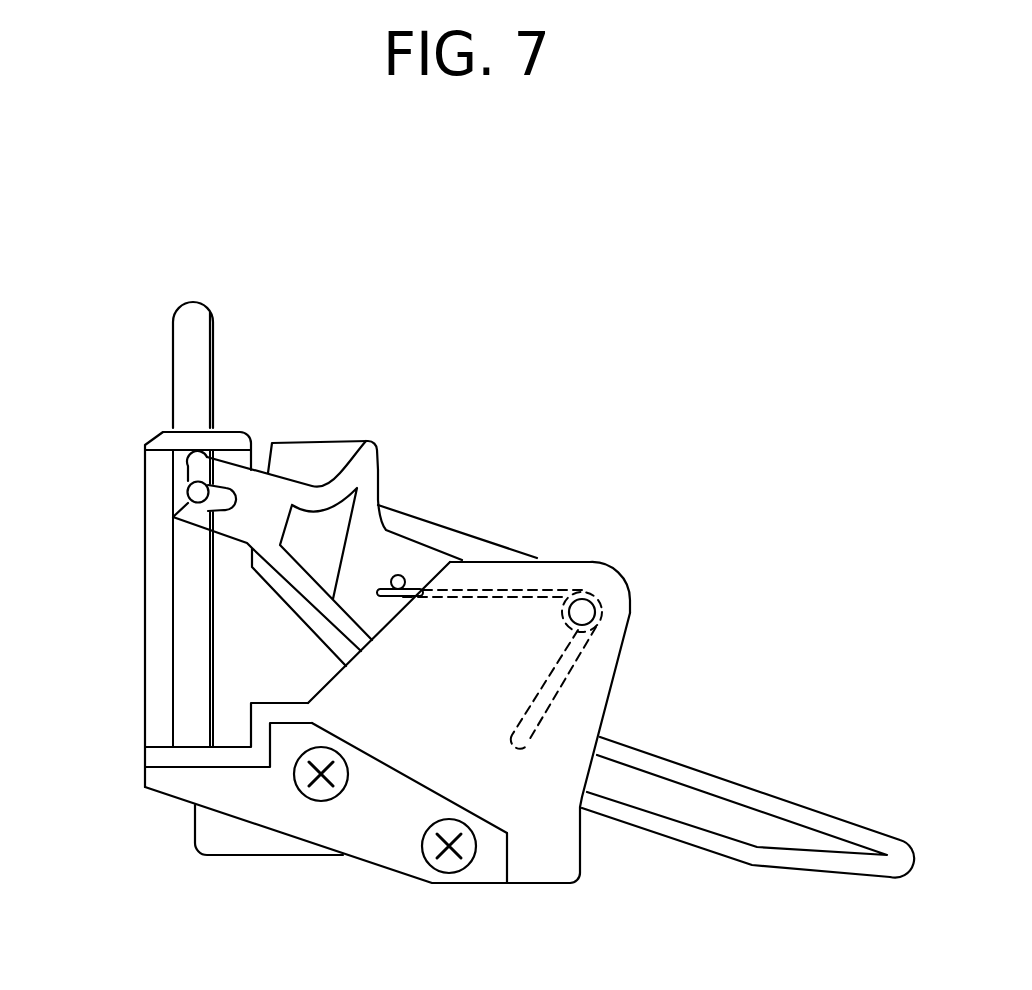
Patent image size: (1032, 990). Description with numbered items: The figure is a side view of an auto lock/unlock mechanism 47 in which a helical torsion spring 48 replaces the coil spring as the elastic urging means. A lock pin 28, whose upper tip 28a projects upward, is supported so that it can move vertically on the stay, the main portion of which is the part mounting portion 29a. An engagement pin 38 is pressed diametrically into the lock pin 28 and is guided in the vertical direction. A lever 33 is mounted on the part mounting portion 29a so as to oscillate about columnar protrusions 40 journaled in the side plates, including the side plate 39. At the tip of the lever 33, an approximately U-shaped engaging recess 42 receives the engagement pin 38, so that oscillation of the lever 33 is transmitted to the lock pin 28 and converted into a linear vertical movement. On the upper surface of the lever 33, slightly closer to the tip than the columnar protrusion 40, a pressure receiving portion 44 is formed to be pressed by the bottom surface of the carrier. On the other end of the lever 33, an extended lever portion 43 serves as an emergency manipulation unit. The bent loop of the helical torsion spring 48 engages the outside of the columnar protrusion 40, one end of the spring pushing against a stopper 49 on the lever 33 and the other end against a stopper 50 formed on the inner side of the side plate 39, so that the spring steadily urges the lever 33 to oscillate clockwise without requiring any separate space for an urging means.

The lock pin 28 is at (183, 383).
The pin tip 28a is at (187, 300).
The part mounting portion 29a is at (542, 862).
The lever 33 is at (268, 634).
The engagement pin 38 is at (187, 492).
The side plate 39 is at (580, 692).
The columnar protrusion 40 is at (580, 610).
The engaging recess 42 is at (218, 467).
The extended lever portion 43 is at (820, 823).
The pressure receiving portion 44 is at (457, 528).
The lock mechanism 47 is at (633, 428).
The helical torsion spring 48 is at (527, 587).
The stopper 49 is at (398, 575).
The stopper 50 is at (527, 745).